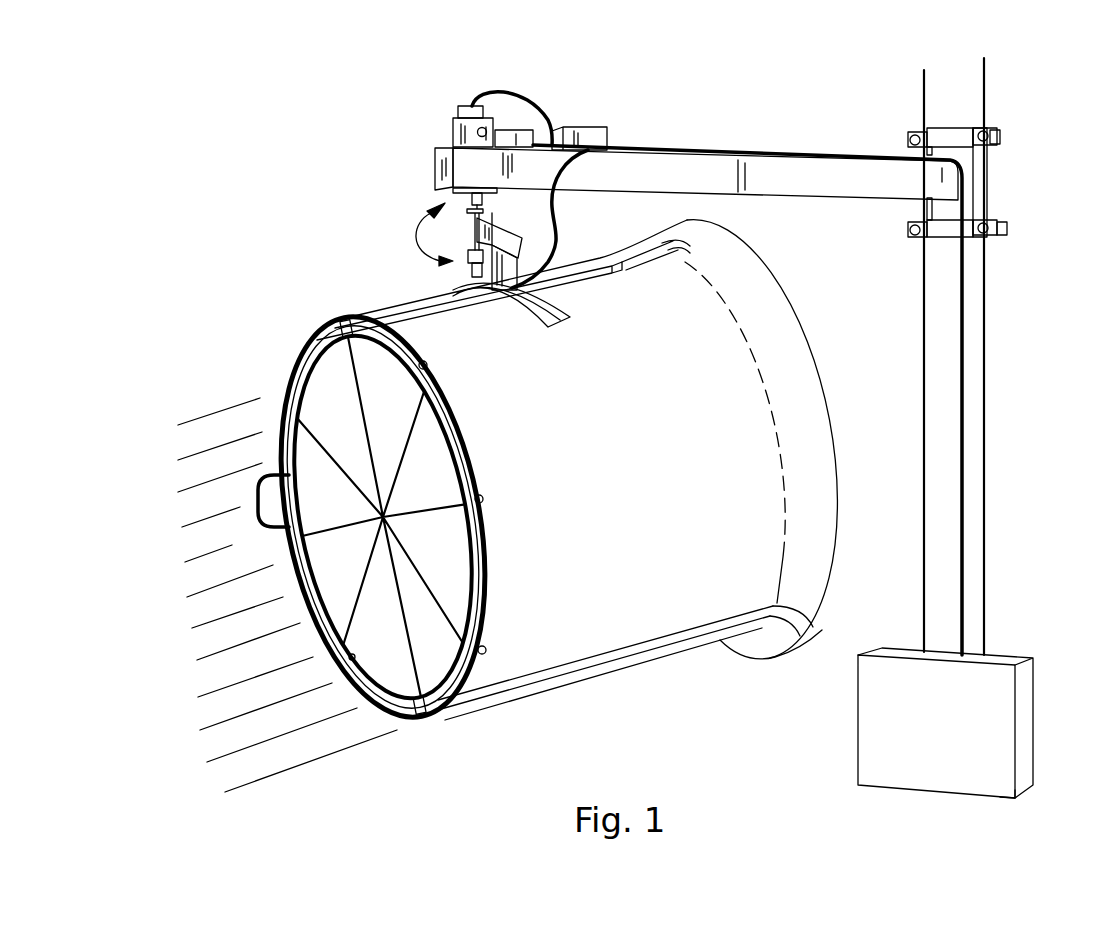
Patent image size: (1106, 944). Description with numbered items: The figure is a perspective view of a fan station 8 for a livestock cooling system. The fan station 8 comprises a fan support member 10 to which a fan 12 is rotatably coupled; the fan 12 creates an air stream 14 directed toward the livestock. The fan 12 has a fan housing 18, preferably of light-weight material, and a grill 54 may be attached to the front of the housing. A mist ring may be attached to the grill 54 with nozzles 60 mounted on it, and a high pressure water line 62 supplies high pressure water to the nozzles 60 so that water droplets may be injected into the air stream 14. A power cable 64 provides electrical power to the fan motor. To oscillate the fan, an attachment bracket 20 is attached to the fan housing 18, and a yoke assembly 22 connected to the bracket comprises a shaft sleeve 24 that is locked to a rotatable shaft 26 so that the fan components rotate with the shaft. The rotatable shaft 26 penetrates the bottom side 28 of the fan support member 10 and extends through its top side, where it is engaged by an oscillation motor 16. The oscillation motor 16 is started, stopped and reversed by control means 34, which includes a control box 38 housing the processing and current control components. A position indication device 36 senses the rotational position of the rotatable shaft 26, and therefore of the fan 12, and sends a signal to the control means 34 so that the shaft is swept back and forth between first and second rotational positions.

The fan station 8 is at (633, 80).
The fan support member 10 is at (435, 163).
The fan 12 is at (660, 675).
The air stream 14 is at (256, 566).
The oscillation motor 16 is at (453, 133).
The fan housing 18 is at (633, 454).
The attachment bracket 20 is at (617, 260).
The yoke assembly 22 is at (510, 237).
The shaft sleeve 24 is at (483, 213).
The rotatable shaft 26 is at (435, 234).
The bottom side 28 is at (800, 197).
The control means 34 is at (1010, 628).
The position indication device 36 is at (466, 103).
The control box 38 is at (1015, 800).
The grill 54 is at (410, 650).
The nozzles 60 is at (298, 360).
The high pressure water line 62 is at (262, 478).
The power cable 64 is at (556, 210).